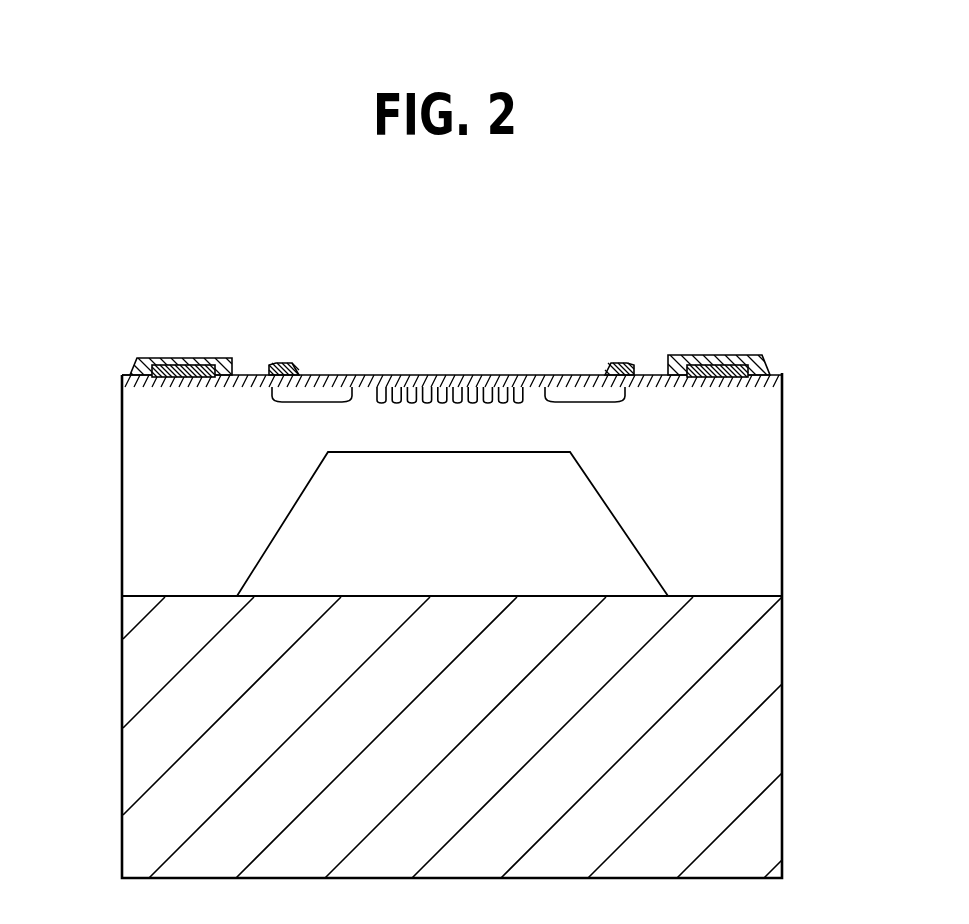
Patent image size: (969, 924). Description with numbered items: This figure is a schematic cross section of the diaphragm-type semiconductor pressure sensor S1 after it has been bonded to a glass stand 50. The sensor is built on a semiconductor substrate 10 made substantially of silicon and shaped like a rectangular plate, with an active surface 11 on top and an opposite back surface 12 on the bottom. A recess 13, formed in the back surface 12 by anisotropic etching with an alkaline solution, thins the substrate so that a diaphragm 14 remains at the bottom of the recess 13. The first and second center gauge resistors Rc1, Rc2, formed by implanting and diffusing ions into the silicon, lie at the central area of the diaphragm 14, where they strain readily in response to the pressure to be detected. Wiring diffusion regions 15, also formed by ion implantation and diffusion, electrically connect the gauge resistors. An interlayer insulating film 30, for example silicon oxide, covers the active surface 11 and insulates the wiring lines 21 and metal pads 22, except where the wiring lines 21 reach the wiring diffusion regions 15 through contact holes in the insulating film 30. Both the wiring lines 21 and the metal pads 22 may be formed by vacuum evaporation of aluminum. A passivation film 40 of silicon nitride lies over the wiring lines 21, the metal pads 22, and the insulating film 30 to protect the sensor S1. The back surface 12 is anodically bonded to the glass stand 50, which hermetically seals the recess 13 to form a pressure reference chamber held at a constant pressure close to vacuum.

The semiconductor substrate 10 is at (758, 447).
The active surface 11 is at (167, 388).
The back surface 12 is at (185, 597).
The recess 13 is at (327, 522).
The diaphragm 14 is at (373, 420).
The wiring diffusion regions 15 is at (335, 396).
The wiring lines 21 is at (284, 372).
The metal pads 22 is at (188, 362).
The interlayer insulating film 30 is at (121, 383).
The passivation film 40 is at (137, 366).
The glass stand 50 is at (758, 736).
The first center gauge resistor Rc1 is at (448, 383).
The second center gauge resistor Rc2 is at (478, 383).
The semiconductor pressure sensor S1 is at (787, 391).